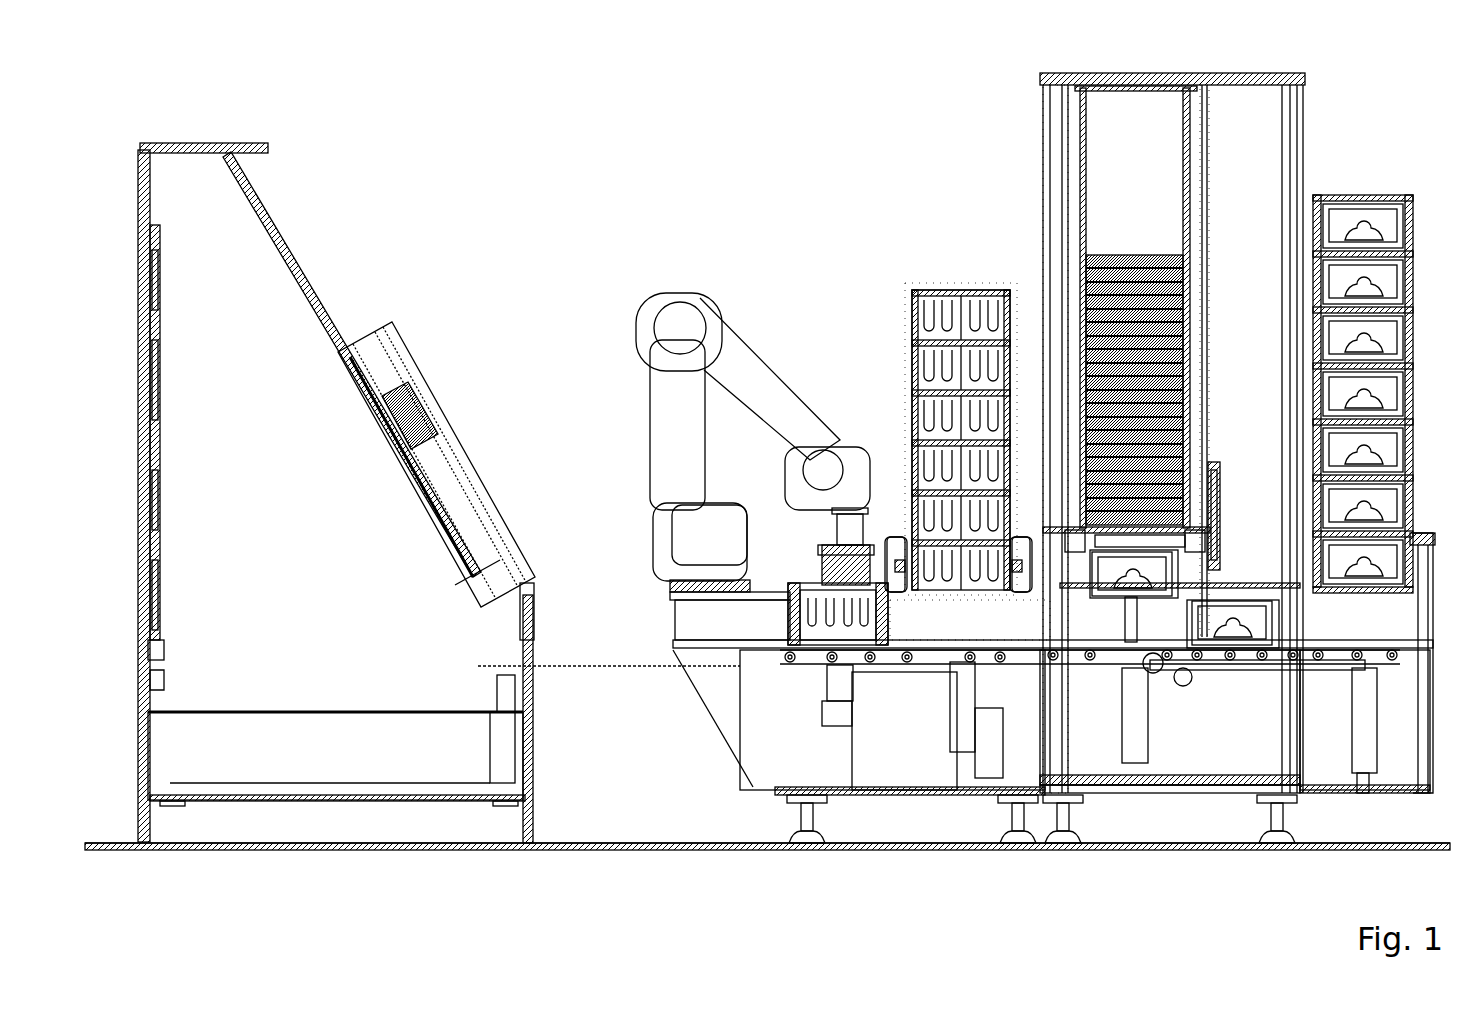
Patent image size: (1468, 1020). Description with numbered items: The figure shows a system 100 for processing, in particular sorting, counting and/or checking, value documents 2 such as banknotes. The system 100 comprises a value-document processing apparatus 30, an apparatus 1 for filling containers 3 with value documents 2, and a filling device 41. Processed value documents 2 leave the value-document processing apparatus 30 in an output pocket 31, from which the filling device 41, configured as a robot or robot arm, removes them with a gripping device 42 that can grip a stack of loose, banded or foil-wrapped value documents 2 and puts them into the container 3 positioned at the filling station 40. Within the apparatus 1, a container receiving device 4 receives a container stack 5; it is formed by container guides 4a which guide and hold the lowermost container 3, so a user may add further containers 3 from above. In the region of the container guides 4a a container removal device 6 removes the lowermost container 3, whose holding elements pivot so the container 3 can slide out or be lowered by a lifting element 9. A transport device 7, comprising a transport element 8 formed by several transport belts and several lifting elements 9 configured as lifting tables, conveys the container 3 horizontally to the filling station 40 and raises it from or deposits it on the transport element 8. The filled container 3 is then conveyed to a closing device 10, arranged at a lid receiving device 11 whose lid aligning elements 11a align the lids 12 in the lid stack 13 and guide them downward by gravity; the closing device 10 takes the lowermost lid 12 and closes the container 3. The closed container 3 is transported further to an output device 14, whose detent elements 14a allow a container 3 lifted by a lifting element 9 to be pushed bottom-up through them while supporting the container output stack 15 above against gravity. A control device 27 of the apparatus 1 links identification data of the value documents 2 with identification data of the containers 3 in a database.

The apparatus 1 is at (1092, 903).
The value documents 2 is at (1397, 228).
The container 3 is at (912, 320).
The container receiving device 4 is at (888, 434).
The container guides 4a is at (897, 535).
The container stack 5 is at (939, 240).
The container removal device 6 is at (1004, 606).
The transport device 7 is at (818, 660).
The transport element 8 is at (1258, 670).
The lifting element 9 is at (836, 668).
The closing device 10 is at (1224, 545).
The lid receiving device 11 is at (1223, 388).
The lid aligning elements 11a is at (1043, 185).
The lid 12 is at (1093, 255).
The lid stack 13 is at (1134, 203).
The output device 14 is at (1441, 627).
The detent elements 14a is at (1415, 535).
The container output stack 15 is at (1384, 353).
The control device 27 is at (904, 731).
The value-document processing apparatus 30 is at (272, 543).
The output pocket 31 is at (398, 372).
The filling station 40 is at (840, 403).
The filling device 41 is at (714, 314).
The gripping device 42 is at (828, 548).
The system 100 is at (628, 181).